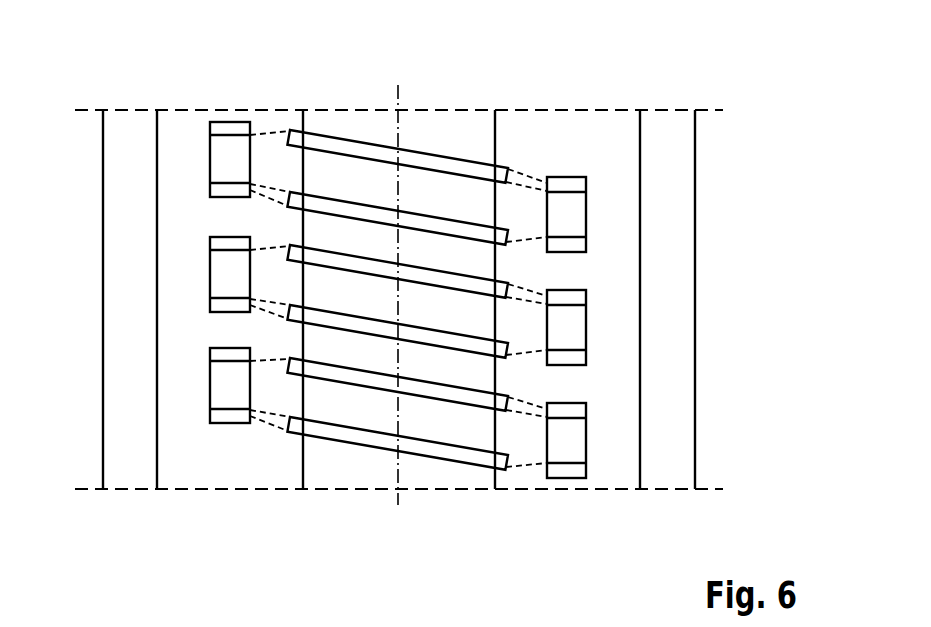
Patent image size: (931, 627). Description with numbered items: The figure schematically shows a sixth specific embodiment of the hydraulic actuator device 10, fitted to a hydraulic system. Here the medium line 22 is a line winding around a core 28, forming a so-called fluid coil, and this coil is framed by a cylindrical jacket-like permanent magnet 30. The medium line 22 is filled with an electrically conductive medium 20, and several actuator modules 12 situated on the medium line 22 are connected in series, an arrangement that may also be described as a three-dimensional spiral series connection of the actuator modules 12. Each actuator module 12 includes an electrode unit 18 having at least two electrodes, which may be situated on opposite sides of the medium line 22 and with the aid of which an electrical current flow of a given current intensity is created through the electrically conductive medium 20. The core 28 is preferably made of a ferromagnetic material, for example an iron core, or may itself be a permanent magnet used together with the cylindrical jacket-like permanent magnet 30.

The hydraulic actuator device 10 is at (166, 60).
The actuator module 12 is at (229, 120).
The electrode unit 18 is at (229, 190).
The electrically conductive medium 20 is at (570, 325).
The medium line 22 is at (228, 383).
The core 28 is at (345, 473).
The cylindrical jacket-like permanent magnet 30 is at (672, 148).